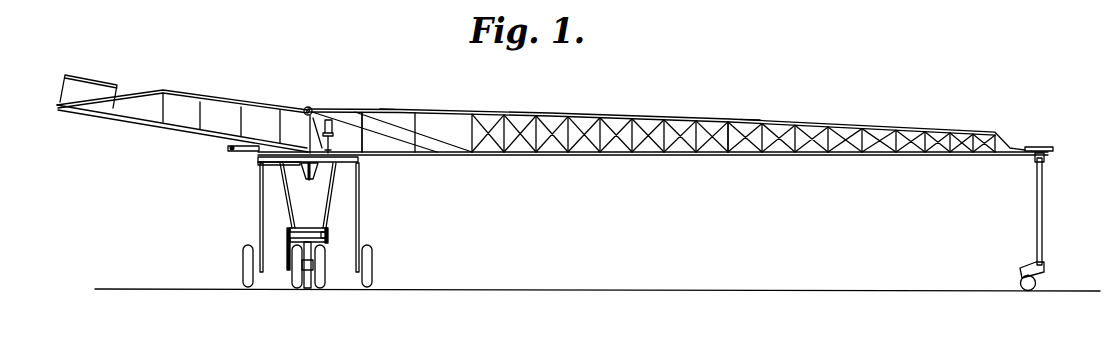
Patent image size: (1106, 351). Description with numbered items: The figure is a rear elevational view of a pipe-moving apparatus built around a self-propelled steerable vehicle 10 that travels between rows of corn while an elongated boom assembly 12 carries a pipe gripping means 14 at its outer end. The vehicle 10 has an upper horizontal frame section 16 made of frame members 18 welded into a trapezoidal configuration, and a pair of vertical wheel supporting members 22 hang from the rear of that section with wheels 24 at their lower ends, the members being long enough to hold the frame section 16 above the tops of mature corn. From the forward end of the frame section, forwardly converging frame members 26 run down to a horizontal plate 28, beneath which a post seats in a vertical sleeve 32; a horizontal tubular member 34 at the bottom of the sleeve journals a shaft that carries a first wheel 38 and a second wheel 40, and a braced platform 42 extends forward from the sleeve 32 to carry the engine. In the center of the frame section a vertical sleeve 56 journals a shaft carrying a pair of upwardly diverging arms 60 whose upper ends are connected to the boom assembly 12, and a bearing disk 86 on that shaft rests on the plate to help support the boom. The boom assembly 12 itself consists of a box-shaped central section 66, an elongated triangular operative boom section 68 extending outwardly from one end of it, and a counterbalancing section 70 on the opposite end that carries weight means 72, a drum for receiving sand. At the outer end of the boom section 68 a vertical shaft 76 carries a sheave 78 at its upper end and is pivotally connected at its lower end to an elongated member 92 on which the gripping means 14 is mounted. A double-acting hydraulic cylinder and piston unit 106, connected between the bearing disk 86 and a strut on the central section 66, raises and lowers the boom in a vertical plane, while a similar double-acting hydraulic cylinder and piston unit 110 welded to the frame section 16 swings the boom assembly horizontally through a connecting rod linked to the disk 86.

The self-propelled steerable vehicle 10 is at (308, 234).
The boom assembly 12 is at (438, 102).
The pipe gripping means 14 is at (1010, 262).
The upper horizontal frame section 16 is at (366, 160).
The frame members 18 is at (260, 170).
The vertical wheel supporting members 22 is at (258, 205).
The wheels 24 is at (242, 273).
The forwardly converging frame members 26 is at (289, 196).
The horizontal plate 28 is at (317, 224).
The vertical sleeve 32 is at (326, 241).
The horizontal tubular member 34 is at (307, 272).
The first wheel 38 is at (325, 290).
The second wheel 40 is at (291, 287).
The platform 42 is at (326, 233).
The vertical sleeve 56 is at (315, 180).
The upwardly diverging arms 60 is at (307, 127).
The central section 66 is at (382, 109).
The operative boom section 68 is at (747, 121).
The counterbalancing section 70 is at (97, 118).
The weight means 72 is at (78, 74).
The vertical shaft 76 is at (1045, 161).
The sheave 78 is at (1054, 150).
The bearing disk 86 is at (334, 148).
The elongated member 92 is at (1037, 205).
The double-acting hydraulic cylinder and piston unit 106 is at (348, 126).
The double-acting hydraulic cylinder and piston unit 110 is at (258, 158).